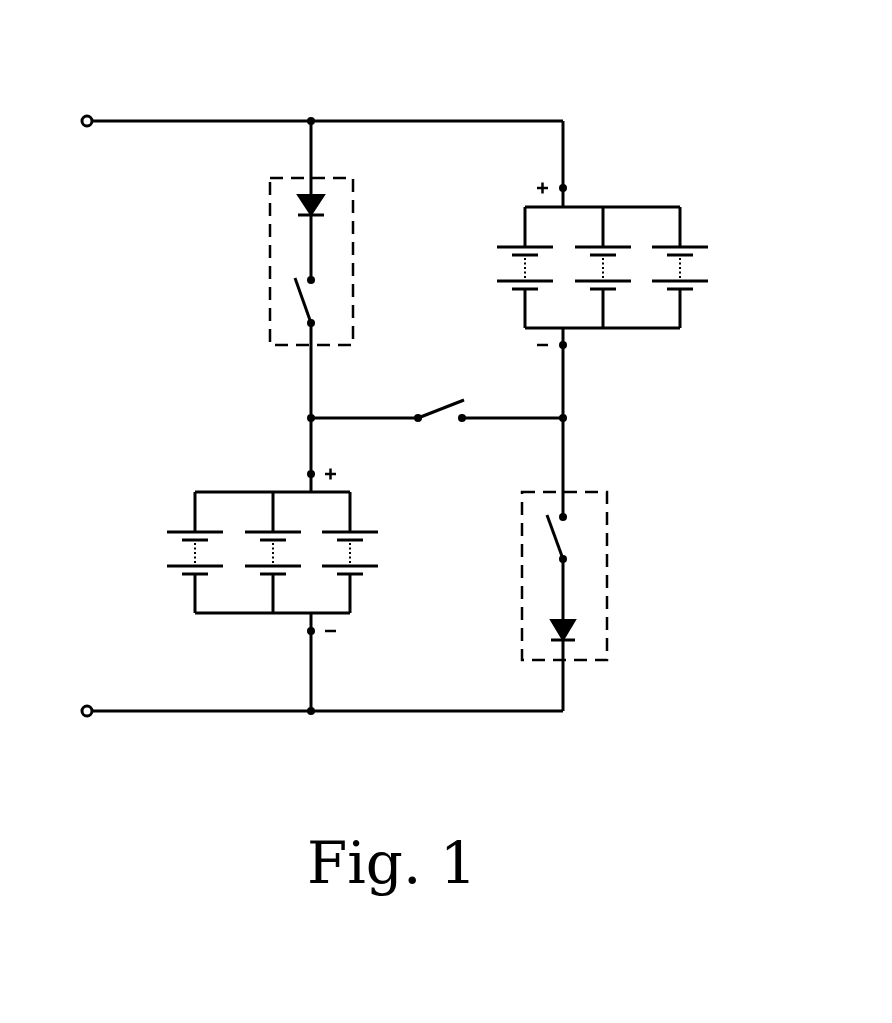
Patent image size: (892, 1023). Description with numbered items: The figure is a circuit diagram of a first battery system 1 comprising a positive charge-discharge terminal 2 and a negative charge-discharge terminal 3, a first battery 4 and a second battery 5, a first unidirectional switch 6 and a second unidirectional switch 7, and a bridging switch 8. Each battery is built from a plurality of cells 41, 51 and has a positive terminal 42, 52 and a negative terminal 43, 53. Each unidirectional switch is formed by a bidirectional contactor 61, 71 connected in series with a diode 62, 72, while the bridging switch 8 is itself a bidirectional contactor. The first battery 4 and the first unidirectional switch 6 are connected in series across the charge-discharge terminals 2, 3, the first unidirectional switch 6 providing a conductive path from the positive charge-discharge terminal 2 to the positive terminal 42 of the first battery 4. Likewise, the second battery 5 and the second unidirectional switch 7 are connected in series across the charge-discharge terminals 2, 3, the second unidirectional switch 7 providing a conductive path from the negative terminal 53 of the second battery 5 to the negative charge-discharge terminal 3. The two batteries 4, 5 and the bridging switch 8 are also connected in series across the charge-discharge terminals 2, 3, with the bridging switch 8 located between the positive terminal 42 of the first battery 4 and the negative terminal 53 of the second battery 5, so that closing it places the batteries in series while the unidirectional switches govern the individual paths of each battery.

The battery system 1 is at (628, 55).
The positive charge-discharge terminal 2 is at (87, 115).
The negative charge-discharge terminal 3 is at (87, 705).
The first battery 4 is at (243, 547).
The cells 41 is at (180, 563).
The positive terminal 42 is at (308, 472).
The negative terminal 43 is at (308, 633).
The second battery 5 is at (631, 261).
The cells 51 is at (697, 278).
The positive terminal 52 is at (566, 186).
The negative terminal 53 is at (568, 348).
The first unidirectional switch 6 is at (306, 261).
The bidirectional contactor 61 is at (300, 297).
The diode 62 is at (298, 205).
The second unidirectional switch 7 is at (561, 576).
The bidirectional contactor 71 is at (548, 532).
The diode 72 is at (553, 630).
The bridging switch 8 is at (452, 400).